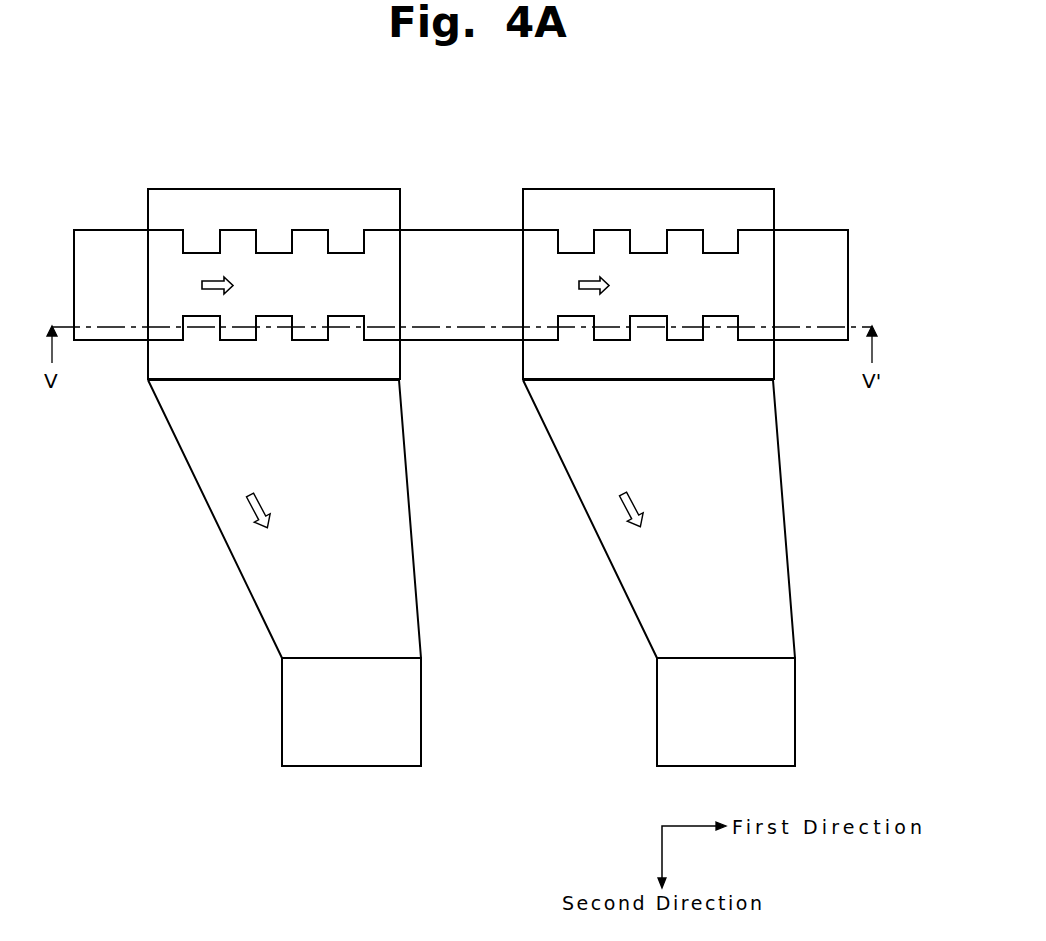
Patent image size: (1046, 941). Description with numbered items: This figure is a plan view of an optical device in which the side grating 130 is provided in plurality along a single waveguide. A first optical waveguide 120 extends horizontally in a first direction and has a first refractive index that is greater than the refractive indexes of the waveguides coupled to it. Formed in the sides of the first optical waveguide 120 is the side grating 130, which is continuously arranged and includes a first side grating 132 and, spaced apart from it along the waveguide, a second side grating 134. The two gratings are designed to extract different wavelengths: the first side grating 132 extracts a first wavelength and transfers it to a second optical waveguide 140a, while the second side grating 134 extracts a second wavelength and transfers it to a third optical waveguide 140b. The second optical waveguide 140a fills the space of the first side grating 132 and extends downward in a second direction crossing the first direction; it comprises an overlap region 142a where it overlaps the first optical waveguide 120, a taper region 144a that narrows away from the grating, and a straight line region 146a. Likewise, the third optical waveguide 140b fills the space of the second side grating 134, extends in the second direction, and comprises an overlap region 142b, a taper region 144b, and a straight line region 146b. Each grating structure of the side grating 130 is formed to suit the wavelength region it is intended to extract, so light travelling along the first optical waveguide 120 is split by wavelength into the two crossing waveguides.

The first optical waveguide 120 is at (830, 280).
The side grating 130 is at (672, 138).
The first side grating 132 is at (272, 247).
The second side grating 134 is at (649, 247).
The second optical waveguide 140a is at (360, 566).
The overlap region 142a is at (390, 367).
The taper region 144a is at (390, 570).
The straight line region 146a is at (392, 712).
The third optical waveguide 140b is at (736, 566).
The overlap region 142b is at (765, 367).
The taper region 144b is at (763, 570).
The straight line region 146b is at (767, 712).